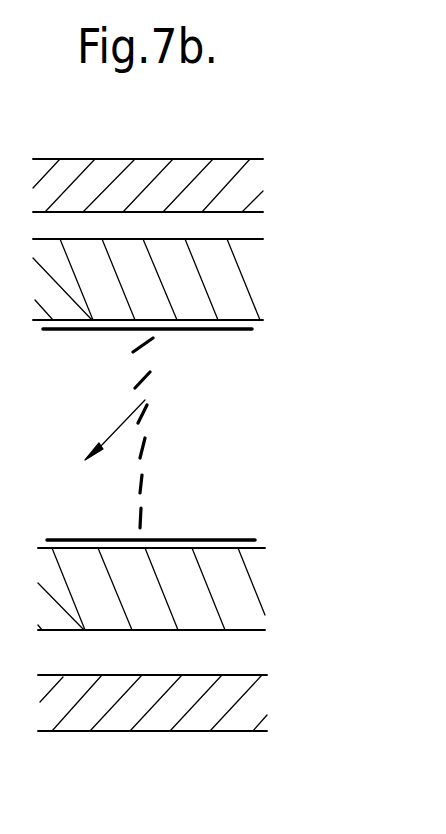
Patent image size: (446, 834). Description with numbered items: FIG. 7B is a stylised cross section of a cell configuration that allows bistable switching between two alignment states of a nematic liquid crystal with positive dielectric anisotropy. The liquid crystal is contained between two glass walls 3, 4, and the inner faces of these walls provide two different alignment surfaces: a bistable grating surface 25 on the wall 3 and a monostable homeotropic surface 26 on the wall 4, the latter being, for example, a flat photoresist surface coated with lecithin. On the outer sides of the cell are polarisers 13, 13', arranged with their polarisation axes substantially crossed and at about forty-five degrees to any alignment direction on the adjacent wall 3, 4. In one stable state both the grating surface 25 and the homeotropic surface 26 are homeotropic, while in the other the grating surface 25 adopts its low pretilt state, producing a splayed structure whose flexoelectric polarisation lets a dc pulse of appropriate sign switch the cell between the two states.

The polariser 13 is at (172, 167).
The glass wall 3 is at (253, 275).
The bistable grating surface 25 is at (232, 332).
The monostable homeotropic surface 26 is at (238, 538).
The glass wall 4 is at (245, 588).
The polariser 13' is at (178, 728).